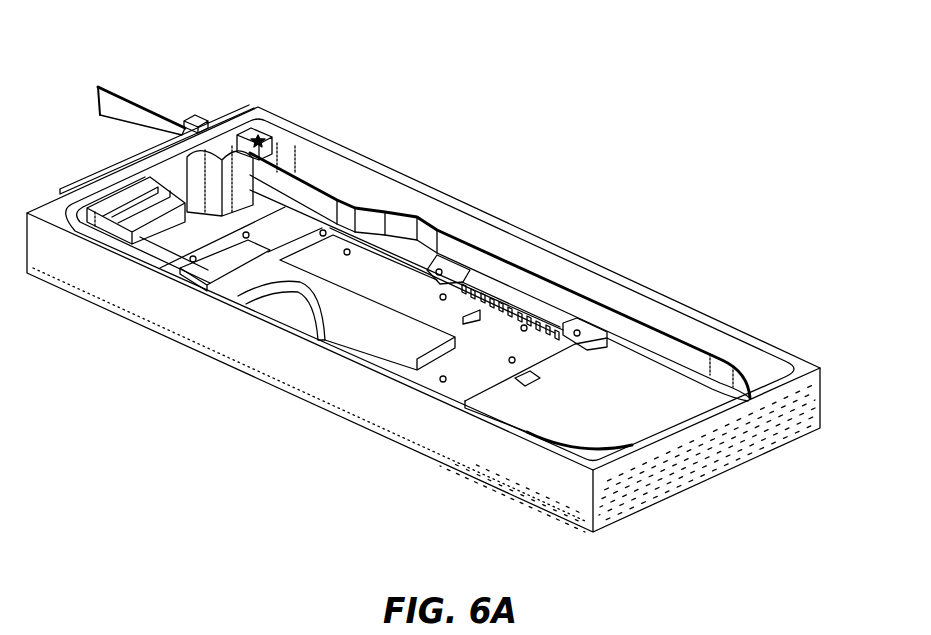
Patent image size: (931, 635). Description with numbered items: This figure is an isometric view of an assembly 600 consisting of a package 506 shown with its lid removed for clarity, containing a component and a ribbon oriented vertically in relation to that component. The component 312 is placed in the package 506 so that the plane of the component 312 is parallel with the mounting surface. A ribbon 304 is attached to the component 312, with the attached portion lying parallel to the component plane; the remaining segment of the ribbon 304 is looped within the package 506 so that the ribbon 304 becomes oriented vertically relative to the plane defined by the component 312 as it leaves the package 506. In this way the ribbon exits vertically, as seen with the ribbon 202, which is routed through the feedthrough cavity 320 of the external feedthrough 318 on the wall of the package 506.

The assembly 600 is at (492, 38).
The package 506 is at (482, 210).
The ribbon 202 is at (123, 98).
The external feedthrough 318 is at (205, 115).
The feedthrough cavity 320 is at (262, 140).
The ribbon 304 is at (320, 187).
The component 312 is at (278, 308).